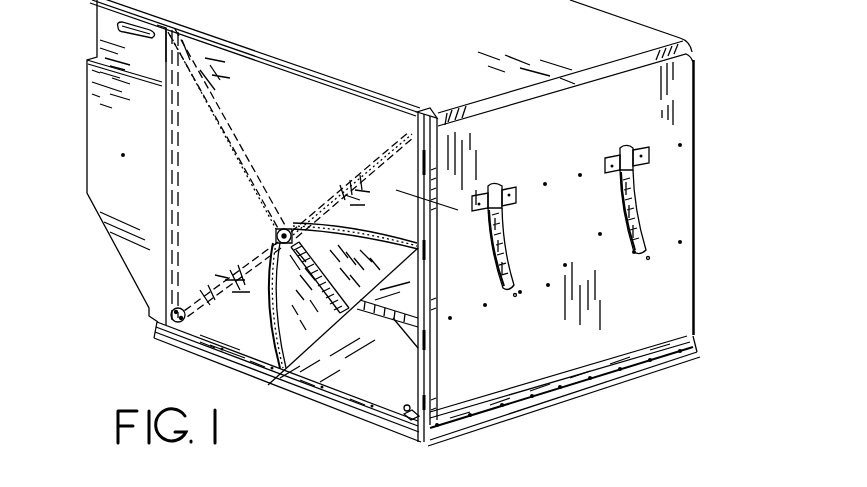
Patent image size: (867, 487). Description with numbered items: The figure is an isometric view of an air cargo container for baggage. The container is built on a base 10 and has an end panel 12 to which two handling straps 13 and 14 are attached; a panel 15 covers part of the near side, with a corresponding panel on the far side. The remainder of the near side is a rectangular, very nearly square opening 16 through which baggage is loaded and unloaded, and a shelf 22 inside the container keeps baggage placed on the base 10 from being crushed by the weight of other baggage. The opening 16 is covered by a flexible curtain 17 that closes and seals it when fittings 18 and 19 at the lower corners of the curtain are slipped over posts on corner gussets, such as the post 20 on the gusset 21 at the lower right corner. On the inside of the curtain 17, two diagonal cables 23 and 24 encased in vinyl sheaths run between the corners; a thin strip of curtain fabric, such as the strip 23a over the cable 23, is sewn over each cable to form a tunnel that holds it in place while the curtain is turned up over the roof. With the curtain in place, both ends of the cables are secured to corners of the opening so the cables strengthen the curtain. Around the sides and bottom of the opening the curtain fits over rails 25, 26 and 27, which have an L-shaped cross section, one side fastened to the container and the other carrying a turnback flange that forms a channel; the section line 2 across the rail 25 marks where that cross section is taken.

The section line 2- 2 is at (404, 197).
The base 10 is at (600, 385).
The end panel 12 is at (672, 287).
The handling strap 13 is at (500, 262).
The handling strap 14 is at (636, 215).
The panel 15 is at (117, 160).
The opening 16 is at (366, 376).
The flexible curtain 17 is at (232, 328).
The fitting 18 is at (178, 308).
The fitting 19 is at (284, 229).
The post 20 is at (408, 416).
The gusset 21 is at (409, 406).
The shelf 22 is at (376, 298).
The diagonal cable 23 is at (246, 150).
The strip 23a is at (313, 260).
The diagonal cable 24 is at (338, 182).
The rail 25 is at (430, 380).
The rail 26 is at (290, 376).
The rail 27 is at (172, 232).